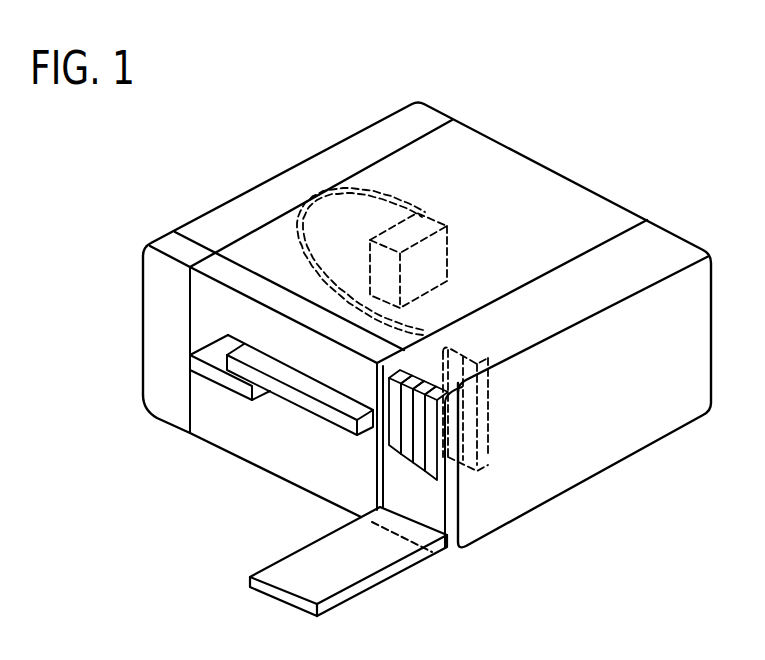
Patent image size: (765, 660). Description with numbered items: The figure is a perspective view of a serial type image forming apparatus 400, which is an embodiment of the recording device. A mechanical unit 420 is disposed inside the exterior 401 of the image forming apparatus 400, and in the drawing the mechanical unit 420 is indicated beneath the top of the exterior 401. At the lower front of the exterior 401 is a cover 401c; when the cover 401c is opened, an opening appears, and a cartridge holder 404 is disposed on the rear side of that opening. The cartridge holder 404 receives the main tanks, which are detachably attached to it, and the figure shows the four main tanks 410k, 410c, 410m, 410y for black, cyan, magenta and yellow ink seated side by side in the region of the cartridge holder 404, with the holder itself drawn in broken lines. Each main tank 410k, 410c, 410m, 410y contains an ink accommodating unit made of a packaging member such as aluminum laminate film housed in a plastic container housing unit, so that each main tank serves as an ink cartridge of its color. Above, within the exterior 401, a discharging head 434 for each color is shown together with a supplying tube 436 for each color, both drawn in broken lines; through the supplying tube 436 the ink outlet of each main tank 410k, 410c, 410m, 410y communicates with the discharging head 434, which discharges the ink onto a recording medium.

The image forming apparatus 400 is at (642, 123).
The exterior 401 is at (250, 189).
The cover 401c is at (376, 580).
The cartridge holder 404 is at (488, 416).
The main tank 410k is at (392, 444).
The main tank 410c is at (402, 451).
The main tank 410m is at (414, 459).
The main tank 410y is at (425, 469).
The mechanical unit 420 is at (506, 218).
The discharging head 434 is at (420, 215).
The supplying tube 436 is at (340, 193).